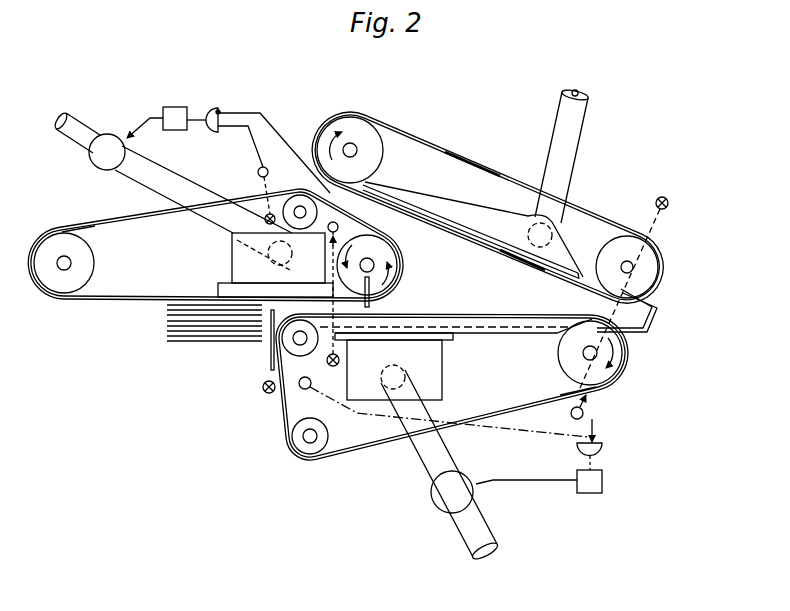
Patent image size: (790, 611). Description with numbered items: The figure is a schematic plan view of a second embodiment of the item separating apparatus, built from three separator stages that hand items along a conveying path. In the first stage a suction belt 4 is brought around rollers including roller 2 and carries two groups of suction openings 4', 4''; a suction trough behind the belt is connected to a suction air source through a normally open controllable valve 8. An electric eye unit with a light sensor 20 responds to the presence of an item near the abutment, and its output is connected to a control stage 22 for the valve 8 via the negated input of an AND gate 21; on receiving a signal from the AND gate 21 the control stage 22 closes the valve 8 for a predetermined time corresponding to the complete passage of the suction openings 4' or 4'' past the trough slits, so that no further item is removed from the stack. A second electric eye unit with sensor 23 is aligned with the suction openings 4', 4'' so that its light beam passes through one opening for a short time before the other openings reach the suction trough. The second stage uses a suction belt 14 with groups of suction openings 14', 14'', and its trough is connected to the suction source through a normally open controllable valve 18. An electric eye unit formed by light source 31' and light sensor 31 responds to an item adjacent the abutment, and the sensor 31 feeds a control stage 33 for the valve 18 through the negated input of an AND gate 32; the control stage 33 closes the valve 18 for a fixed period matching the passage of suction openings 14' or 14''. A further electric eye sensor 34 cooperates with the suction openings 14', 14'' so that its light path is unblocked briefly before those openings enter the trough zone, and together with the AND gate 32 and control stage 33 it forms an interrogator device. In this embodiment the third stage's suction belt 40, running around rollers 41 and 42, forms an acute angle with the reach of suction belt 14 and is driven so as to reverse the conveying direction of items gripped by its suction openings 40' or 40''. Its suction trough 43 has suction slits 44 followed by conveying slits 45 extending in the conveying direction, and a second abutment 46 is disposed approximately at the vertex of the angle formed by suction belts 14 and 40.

The roller 2 is at (298, 196).
The suction belt 4 is at (215, 268).
The suction openings 4' is at (391, 293).
The suction openings 4'' is at (77, 212).
The controllable valve 8 is at (108, 136).
The suction belt 14 is at (452, 370).
The suction openings 14' is at (248, 351).
The suction openings 14'' is at (617, 404).
The controllable valve 18 is at (450, 503).
The light sensor 20 is at (338, 227).
The AND gate 21 is at (211, 106).
The control stage 22 is at (176, 107).
The light sensor 23 is at (258, 172).
The light sensor 31 is at (598, 418).
The light source 31' is at (625, 274).
The AND gate 32 is at (600, 455).
The control stage 33 is at (588, 494).
The light sensor 34 is at (311, 390).
The suction belt 40 is at (487, 207).
The suction openings 40' is at (473, 153).
The suction openings 40'' is at (522, 279).
The roller 41 is at (355, 122).
The roller 42 is at (651, 263).
The suction trough 43 is at (510, 215).
The suction slits 44 is at (480, 229).
The conveying slits 45 is at (460, 215).
The second abutment 46 is at (644, 330).